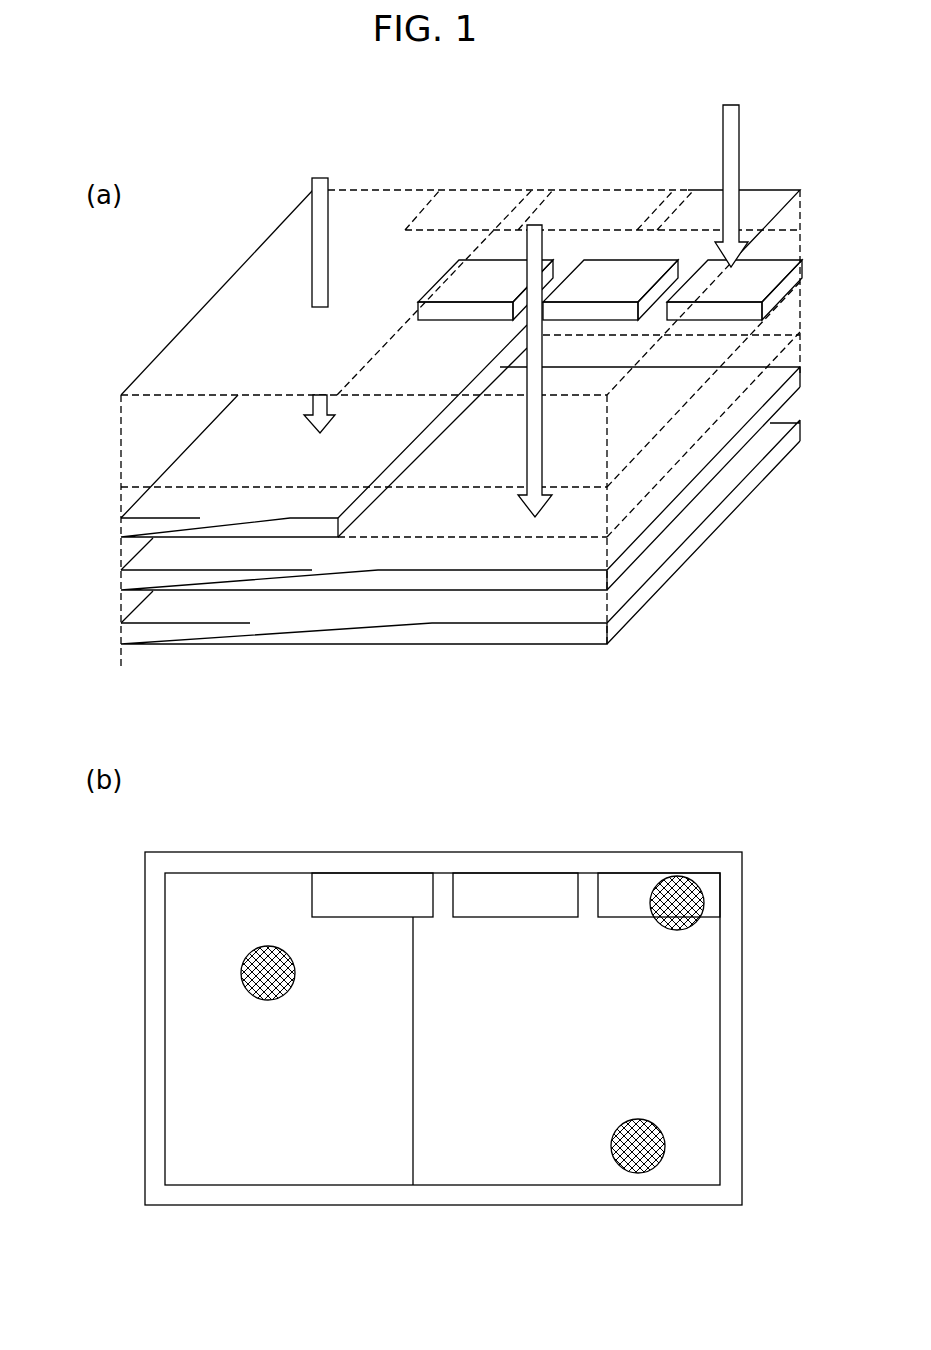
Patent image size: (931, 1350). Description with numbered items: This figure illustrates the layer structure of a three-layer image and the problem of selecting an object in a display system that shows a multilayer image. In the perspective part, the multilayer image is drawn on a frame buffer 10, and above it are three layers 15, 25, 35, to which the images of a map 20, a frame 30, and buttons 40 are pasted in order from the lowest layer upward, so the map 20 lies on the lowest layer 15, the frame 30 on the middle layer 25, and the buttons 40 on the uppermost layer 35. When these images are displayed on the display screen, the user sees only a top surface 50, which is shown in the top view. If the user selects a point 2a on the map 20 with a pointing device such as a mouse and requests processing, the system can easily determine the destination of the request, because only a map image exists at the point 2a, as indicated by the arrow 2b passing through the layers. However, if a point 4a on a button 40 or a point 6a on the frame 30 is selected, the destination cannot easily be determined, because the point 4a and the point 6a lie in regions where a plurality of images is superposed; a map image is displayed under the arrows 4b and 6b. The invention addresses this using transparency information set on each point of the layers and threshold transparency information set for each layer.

The frame buffer 10 is at (628, 612).
The layer 15 is at (662, 523).
The map 20 is at (142, 562).
The layer 25 is at (677, 460).
The frame 30 is at (150, 505).
The layer 35 is at (693, 395).
The buttons 40 is at (773, 258).
The top surface 50 is at (244, 264).
The point 2a is at (645, 1173).
The arrow 2b is at (542, 240).
The point 4a is at (683, 892).
The arrow 4b is at (723, 155).
The point 6a is at (255, 947).
The arrow 6b is at (330, 190).